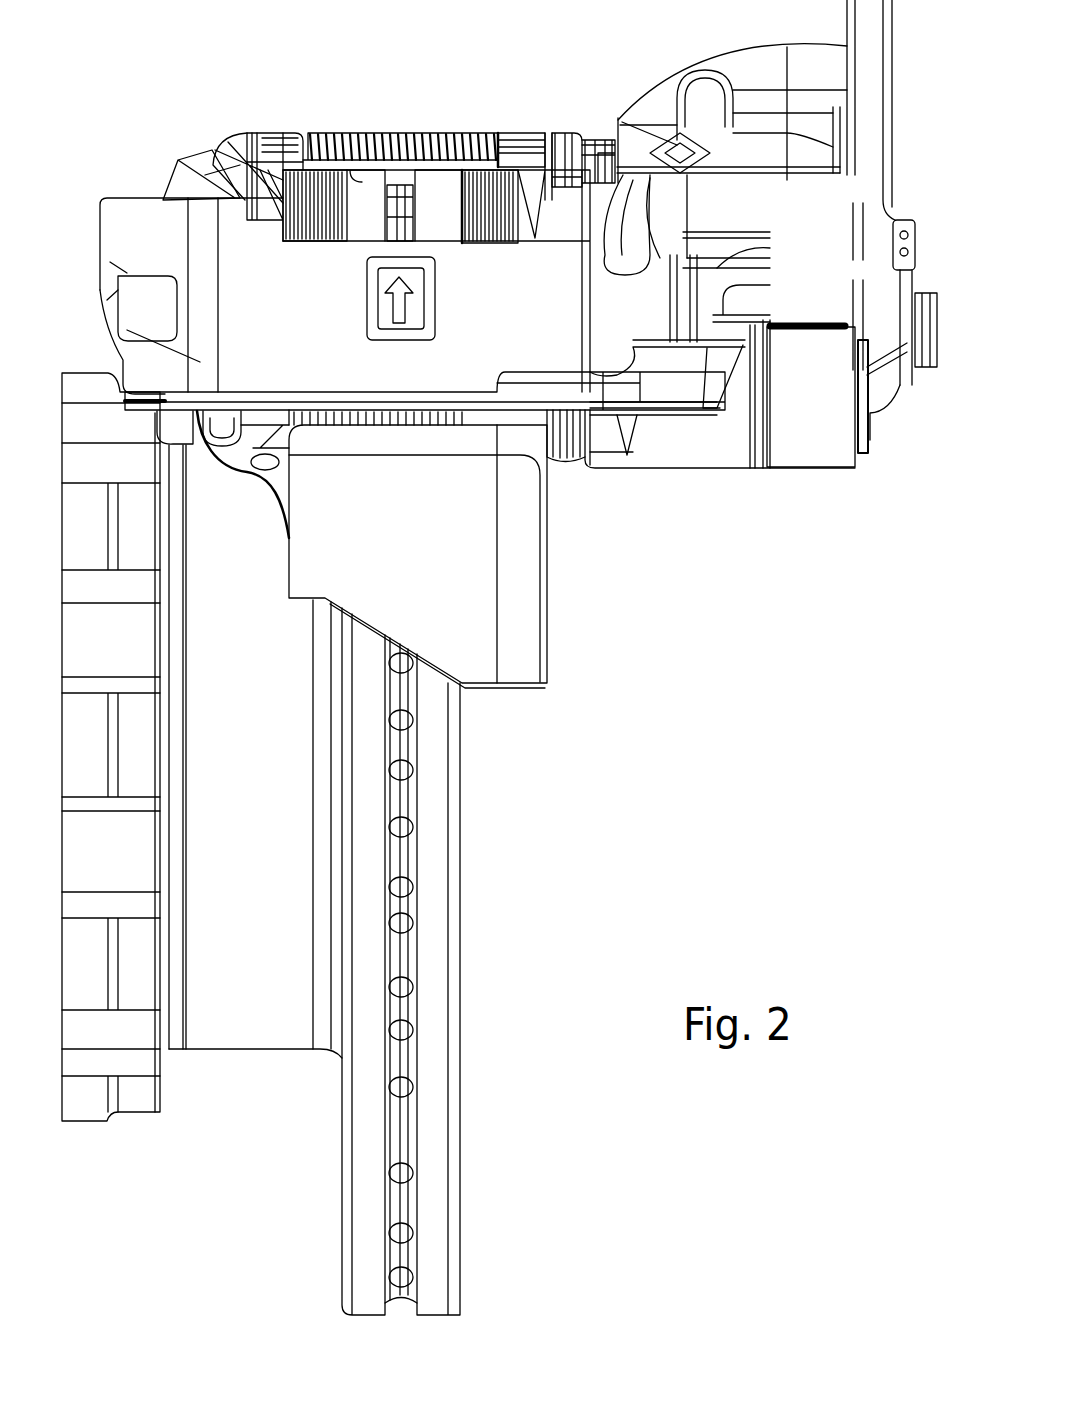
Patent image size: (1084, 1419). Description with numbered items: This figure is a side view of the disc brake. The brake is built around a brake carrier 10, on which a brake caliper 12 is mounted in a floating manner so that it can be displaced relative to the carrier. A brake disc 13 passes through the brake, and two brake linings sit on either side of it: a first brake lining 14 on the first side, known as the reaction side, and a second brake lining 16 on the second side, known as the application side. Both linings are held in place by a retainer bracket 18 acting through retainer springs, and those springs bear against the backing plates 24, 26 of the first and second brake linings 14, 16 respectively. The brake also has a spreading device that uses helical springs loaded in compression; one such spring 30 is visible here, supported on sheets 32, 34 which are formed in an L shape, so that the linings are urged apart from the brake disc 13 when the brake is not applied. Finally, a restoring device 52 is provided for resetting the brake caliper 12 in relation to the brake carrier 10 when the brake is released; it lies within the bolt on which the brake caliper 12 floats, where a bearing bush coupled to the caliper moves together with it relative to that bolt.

The brake carrier 10 is at (515, 575).
The brake caliper 12 is at (177, 237).
The brake disc 13 is at (443, 830).
The first brake lining 14 is at (322, 229).
The second brake lining 16 is at (487, 227).
The retainer bracket 18 is at (233, 137).
The backing plate 24 is at (215, 175).
The backing plate 26 is at (532, 197).
The spring 30 is at (360, 133).
The sheet 32 is at (283, 133).
The sheet 34 is at (503, 168).
The restoring device 52 is at (888, 438).